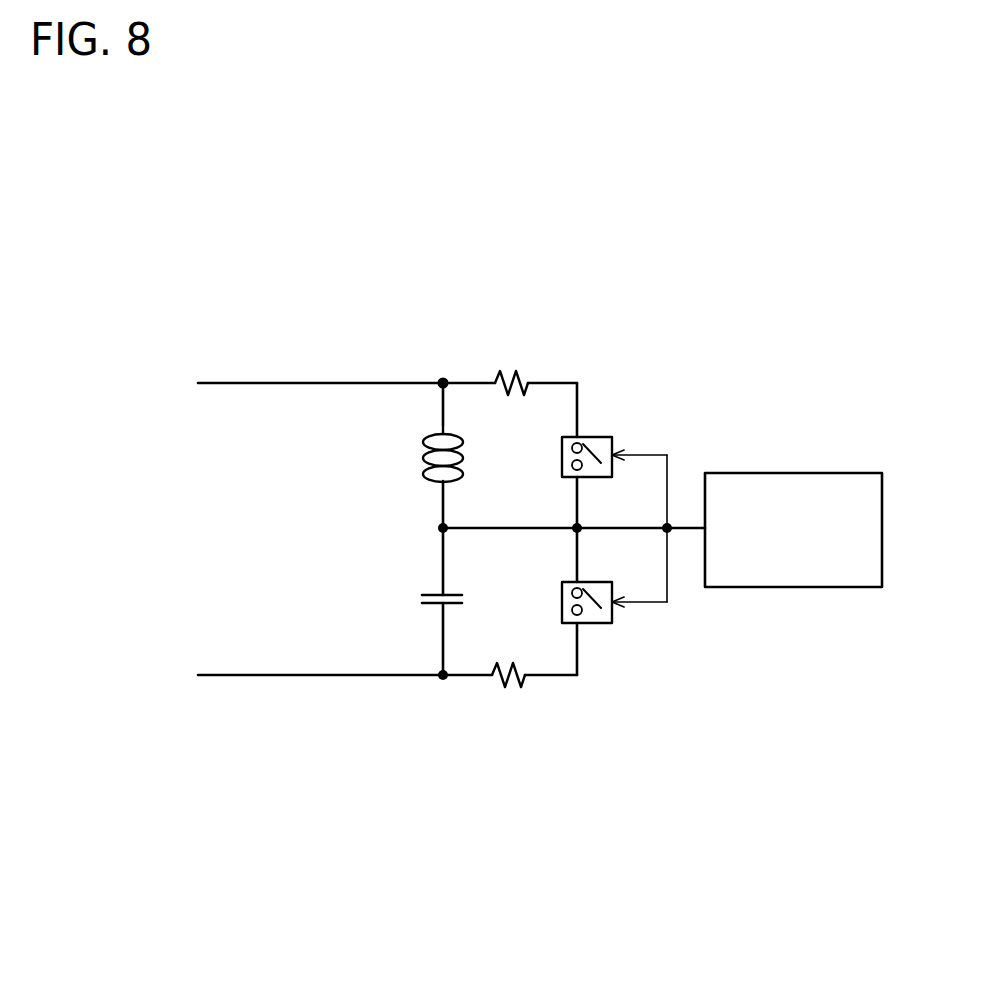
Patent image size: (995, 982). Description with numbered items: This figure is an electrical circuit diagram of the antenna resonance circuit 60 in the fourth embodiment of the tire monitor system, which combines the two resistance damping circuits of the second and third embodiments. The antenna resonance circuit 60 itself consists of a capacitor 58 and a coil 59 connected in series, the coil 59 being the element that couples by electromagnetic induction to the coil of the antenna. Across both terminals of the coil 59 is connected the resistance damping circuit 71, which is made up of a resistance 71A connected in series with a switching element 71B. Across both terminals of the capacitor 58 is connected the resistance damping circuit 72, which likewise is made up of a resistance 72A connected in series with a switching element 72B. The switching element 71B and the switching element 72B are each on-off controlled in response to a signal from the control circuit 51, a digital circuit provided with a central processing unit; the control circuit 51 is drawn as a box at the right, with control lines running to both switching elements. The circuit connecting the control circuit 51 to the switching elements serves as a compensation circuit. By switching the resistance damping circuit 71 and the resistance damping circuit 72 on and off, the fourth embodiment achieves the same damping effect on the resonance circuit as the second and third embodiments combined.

The control circuit 51 is at (792, 473).
The capacitor 58 is at (415, 600).
The coil 59 is at (422, 432).
The antenna resonance circuit 60 is at (447, 360).
The resistance damping circuit 71 is at (618, 361).
The resistance 71A is at (512, 367).
The switching element 71B is at (612, 440).
The resistance damping circuit 72 is at (616, 693).
The resistance 72A is at (510, 690).
The switching element 72B is at (612, 613).